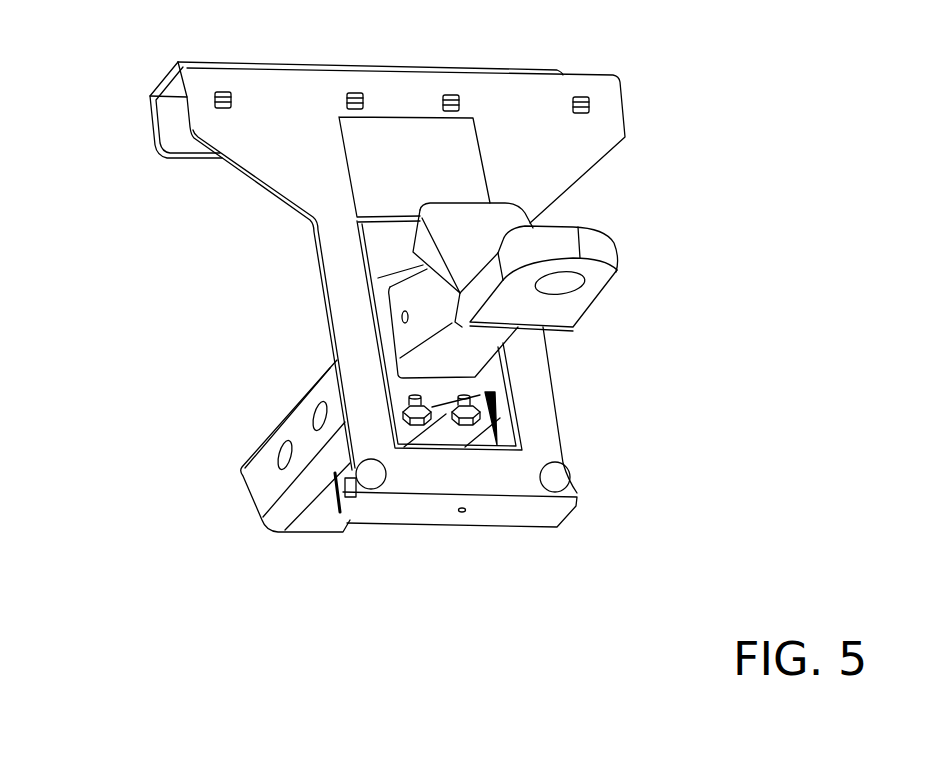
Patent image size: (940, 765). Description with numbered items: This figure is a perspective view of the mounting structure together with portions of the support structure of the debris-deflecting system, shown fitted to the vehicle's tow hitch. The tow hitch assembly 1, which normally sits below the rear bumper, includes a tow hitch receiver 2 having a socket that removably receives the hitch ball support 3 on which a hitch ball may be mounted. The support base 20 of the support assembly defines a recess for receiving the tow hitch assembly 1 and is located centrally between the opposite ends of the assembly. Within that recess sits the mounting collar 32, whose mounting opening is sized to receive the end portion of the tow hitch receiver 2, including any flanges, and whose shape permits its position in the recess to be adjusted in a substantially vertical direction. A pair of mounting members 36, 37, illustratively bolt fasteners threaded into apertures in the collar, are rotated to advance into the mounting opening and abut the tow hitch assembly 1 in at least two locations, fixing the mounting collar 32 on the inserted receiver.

The tow hitch assembly 1 is at (457, 319).
The tow hitch receiver 2 is at (263, 440).
The hitch ball support 3 is at (530, 325).
The support base 20 is at (558, 72).
The mounting collar 32 is at (478, 396).
The mounting member 36 is at (464, 427).
The mounting member 37 is at (422, 427).